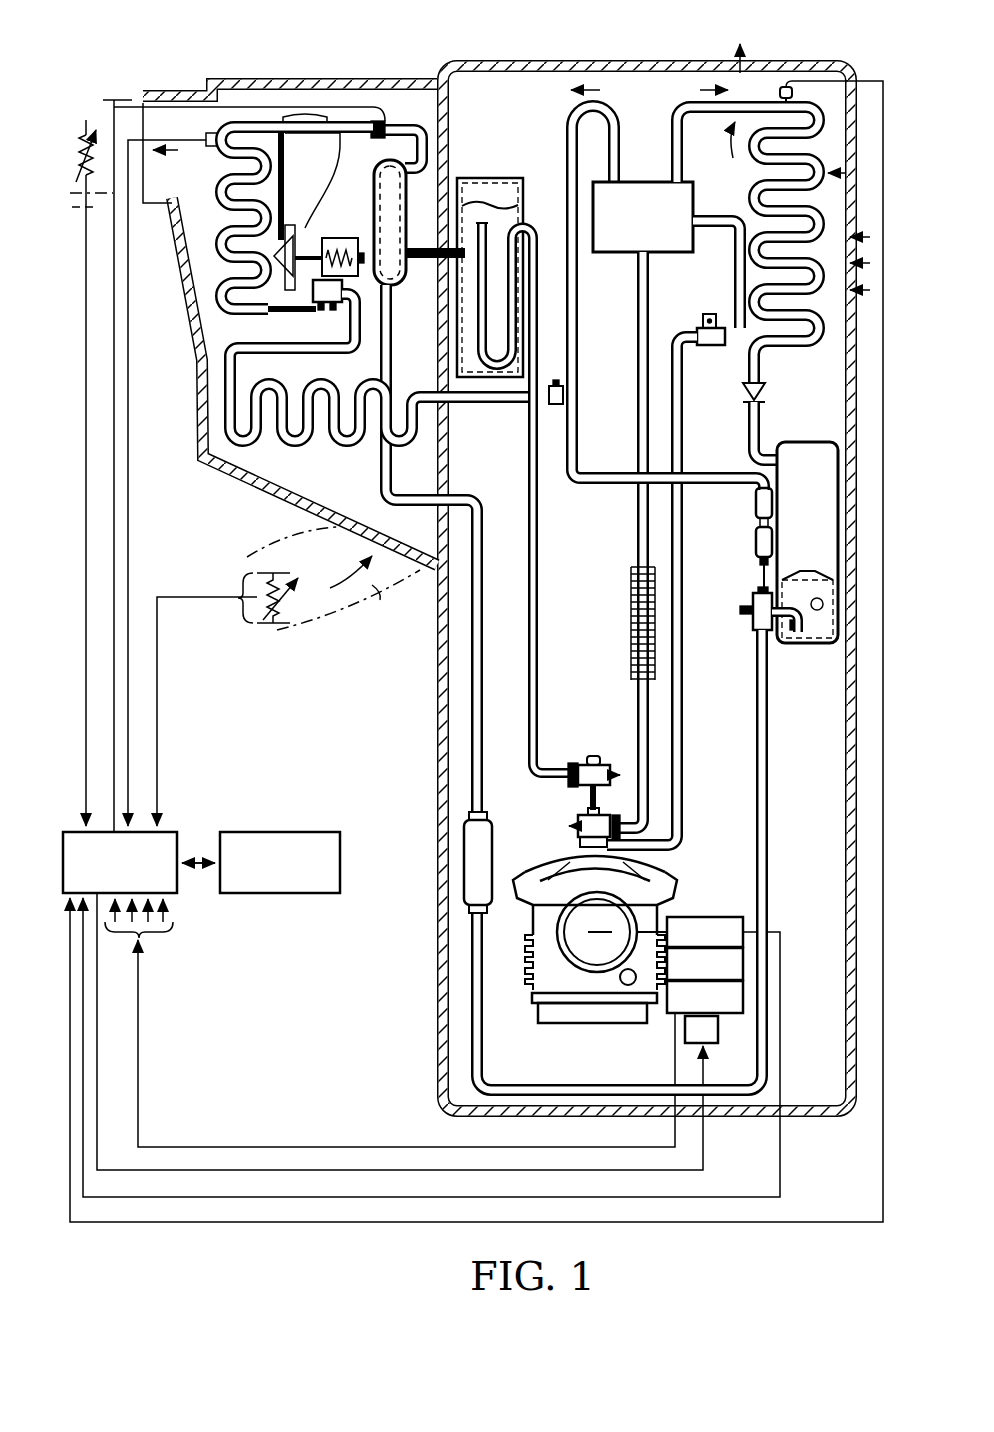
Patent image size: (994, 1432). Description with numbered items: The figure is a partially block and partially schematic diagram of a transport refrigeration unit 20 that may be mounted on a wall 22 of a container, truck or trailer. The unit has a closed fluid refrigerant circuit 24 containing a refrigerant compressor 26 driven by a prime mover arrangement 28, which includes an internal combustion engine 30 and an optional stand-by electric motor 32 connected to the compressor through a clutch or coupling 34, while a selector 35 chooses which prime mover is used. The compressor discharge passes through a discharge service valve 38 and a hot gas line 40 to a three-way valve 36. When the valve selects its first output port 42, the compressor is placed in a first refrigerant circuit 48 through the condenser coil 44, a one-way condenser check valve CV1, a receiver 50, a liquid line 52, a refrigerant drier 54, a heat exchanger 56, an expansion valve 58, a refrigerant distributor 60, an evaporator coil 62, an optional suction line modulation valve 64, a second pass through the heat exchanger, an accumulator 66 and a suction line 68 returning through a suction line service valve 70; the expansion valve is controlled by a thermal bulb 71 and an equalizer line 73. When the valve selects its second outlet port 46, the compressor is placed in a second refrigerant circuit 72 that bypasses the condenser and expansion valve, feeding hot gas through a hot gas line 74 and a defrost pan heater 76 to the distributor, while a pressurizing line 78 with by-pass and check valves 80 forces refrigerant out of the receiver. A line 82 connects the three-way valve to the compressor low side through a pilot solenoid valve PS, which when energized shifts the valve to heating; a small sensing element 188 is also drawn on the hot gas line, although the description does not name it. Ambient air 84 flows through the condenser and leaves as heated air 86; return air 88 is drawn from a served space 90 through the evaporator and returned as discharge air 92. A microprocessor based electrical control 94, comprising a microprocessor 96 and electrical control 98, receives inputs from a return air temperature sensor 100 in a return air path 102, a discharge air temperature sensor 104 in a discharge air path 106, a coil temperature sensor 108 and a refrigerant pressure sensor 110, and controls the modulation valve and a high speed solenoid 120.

The transport refrigeration unit 20 is at (476, 669).
The wall 22 is at (448, 140).
The closed fluid refrigerant circuit 24 is at (630, 538).
The refrigerant compressor 26 is at (535, 990).
The prime mover arrangement 28 is at (700, 917).
The internal combustion engine 30 is at (658, 1022).
The stand-by electric motor 32 is at (743, 932).
The clutch or coupling 34 is at (743, 968).
The selector 35 is at (743, 996).
The three-way valve 36 is at (646, 182).
The discharge service valve 38 is at (578, 834).
The hot gas line 40 is at (636, 496).
The first output port 42 is at (683, 181).
The condenser coil 44 is at (818, 282).
The second outlet port 46 is at (605, 173).
The first refrigerant circuit 48 is at (700, 90).
The receiver 50 is at (796, 643).
The liquid line 52 is at (770, 766).
The refrigerant drier 54 is at (470, 860).
The heat exchanger 56 is at (403, 285).
The expansion valve 58 is at (306, 304).
The refrigerant distributor 60 is at (392, 340).
The evaporator coil 62 is at (214, 247).
The controllable suction line modulation valve 64 is at (384, 122).
The accumulator 66 is at (481, 178).
The suction line 68 is at (527, 446).
The suction line service valve 70 is at (592, 765).
The thermal bulb 71 is at (318, 116).
The second refrigerant circuit 72 is at (600, 90).
The equalizer line 73 is at (333, 197).
The hot gas line 74 is at (578, 298).
The defrost pan heater 76 is at (305, 447).
The by-pass or pressurizing line 78 is at (626, 472).
The by-pass and check valves 80 is at (757, 543).
The conduit or line 82 is at (683, 556).
The ambient air 84 is at (856, 235).
The heated air 86 is at (740, 56).
The return air 88 is at (352, 578).
The served space 90 is at (331, 573).
The discharge air 92 is at (170, 152).
The microprocessor based electrical control 94 is at (219, 824).
The microprocessor 96 is at (171, 832).
The electrical control 98 is at (298, 832).
The return air temperature sensor 100 is at (292, 620).
The return air path 102 is at (380, 594).
The discharge air temperature sensor 104 is at (243, 449).
The discharge air path 106 is at (84, 120).
The coil temperature sensor 108 is at (207, 136).
The refrigerant pressure sensor (HPCO) 110 is at (786, 87).
The throttle or high speed solenoid 120 is at (721, 1040).
The pressure sensor 188 is at (560, 402).
The one-way condenser check valve CV1 is at (744, 394).
The pilot solenoid valve PS is at (700, 330).